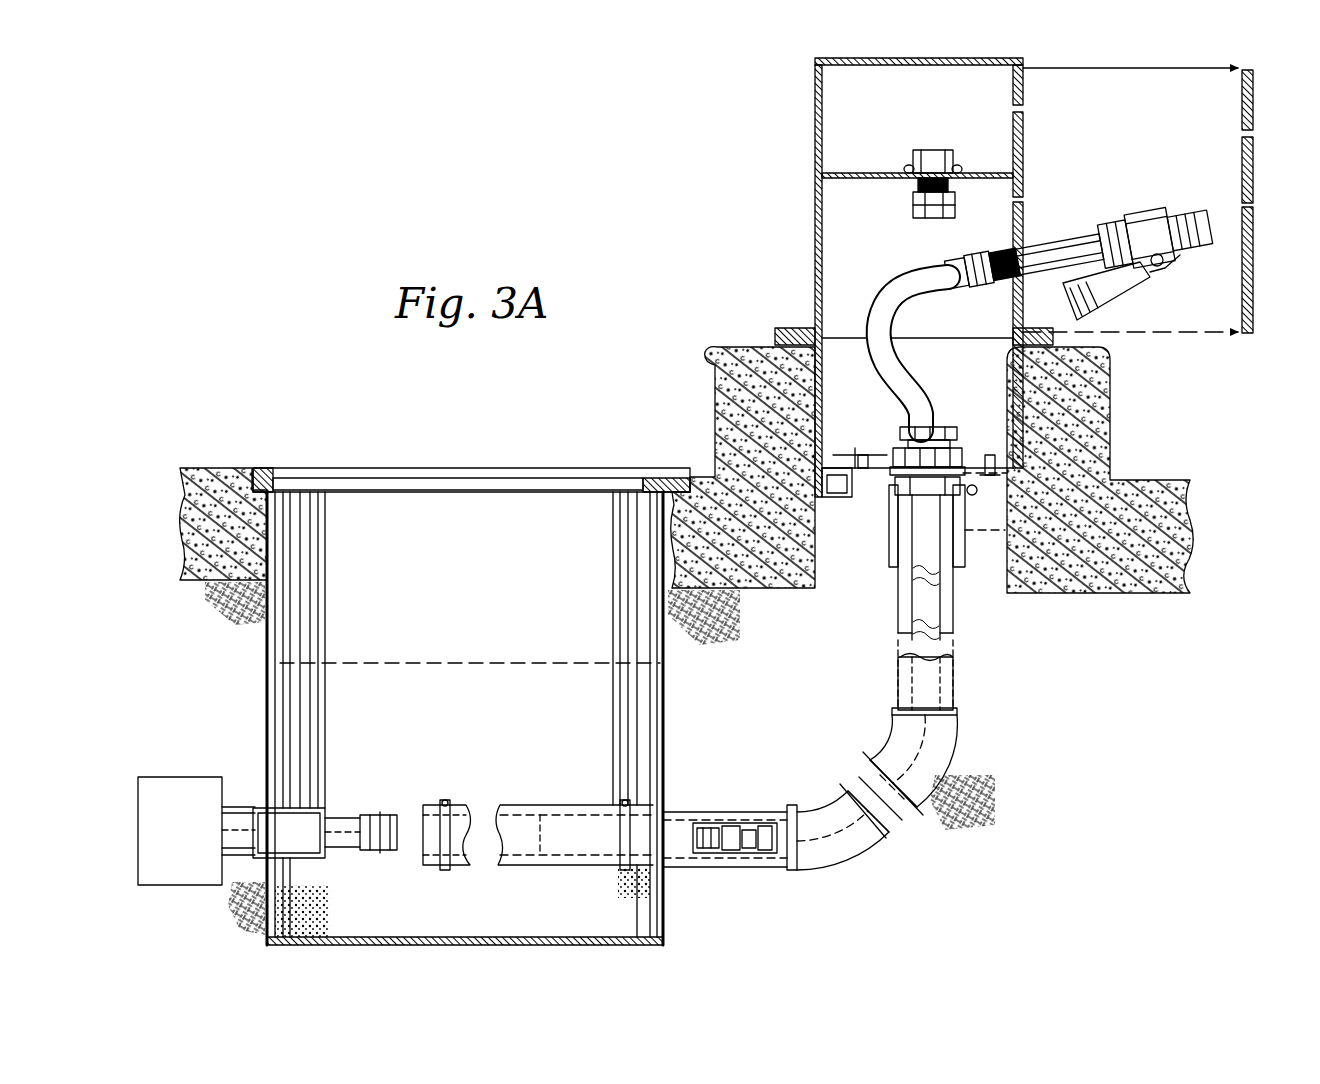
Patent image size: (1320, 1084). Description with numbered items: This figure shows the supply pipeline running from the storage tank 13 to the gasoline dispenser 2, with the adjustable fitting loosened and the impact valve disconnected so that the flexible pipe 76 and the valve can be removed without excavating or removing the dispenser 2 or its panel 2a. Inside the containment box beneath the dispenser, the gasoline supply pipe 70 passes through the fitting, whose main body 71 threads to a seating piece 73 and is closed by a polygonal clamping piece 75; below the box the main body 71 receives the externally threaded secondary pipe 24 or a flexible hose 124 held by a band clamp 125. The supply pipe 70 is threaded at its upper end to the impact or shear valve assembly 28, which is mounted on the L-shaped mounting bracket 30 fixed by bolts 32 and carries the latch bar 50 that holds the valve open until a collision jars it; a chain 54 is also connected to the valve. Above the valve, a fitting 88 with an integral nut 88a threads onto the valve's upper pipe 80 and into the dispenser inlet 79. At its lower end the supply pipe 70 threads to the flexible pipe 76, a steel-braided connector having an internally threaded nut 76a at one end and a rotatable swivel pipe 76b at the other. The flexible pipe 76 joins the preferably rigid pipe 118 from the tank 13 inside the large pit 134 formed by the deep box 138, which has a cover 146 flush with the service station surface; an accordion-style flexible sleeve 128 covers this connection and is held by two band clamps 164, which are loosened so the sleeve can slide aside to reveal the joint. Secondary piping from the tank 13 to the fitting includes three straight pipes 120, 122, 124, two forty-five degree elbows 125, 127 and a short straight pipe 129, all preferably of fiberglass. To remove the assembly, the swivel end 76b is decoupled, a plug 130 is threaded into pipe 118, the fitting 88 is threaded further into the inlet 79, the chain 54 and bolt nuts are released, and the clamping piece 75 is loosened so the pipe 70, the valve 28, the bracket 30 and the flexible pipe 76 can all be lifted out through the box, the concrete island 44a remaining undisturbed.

The gasoline dispenser 2 is at (812, 102).
The dispenser panel 2a is at (1253, 162).
The storage tank 13 is at (222, 778).
The secondary pipe 24 is at (955, 520).
The impact or shear valve assembly 28 is at (1131, 208).
The L-shaped mounting bracket 30 is at (1112, 300).
The bolts 32 is at (1000, 466).
The concrete island 44a is at (1110, 388).
The latch bar 50 is at (1006, 383).
The chain 54 is at (878, 442).
The gasoline supply pipe 70 is at (1041, 277).
The main body 71 is at (897, 513).
The seating piece 73 is at (966, 461).
The clamping piece 75 is at (958, 442).
The flexible pipe 76 is at (873, 356).
The internally threaded nut 76a is at (980, 243).
The externally threadable rotatable pipe 76b is at (720, 824).
The inlet 79 is at (913, 160).
The valve outlet 80 is at (1194, 203).
The fitting 88 is at (912, 206).
The integral nut 88a is at (918, 218).
The pipe 118 is at (330, 818).
The straight pipe 120 is at (240, 807).
The straight pipe 122 is at (700, 870).
The straight pipe 124 is at (1004, 531).
The 45° elbow 125 is at (1006, 478).
The 45° elbow 127 is at (955, 742).
The flexible sleeve 128 is at (562, 805).
The short straight pipe 129 is at (900, 816).
The plug 130 is at (380, 856).
The pit 134 is at (480, 650).
The deep box 138 is at (667, 722).
The cover 146 is at (453, 468).
The band clamps 164 is at (446, 800).